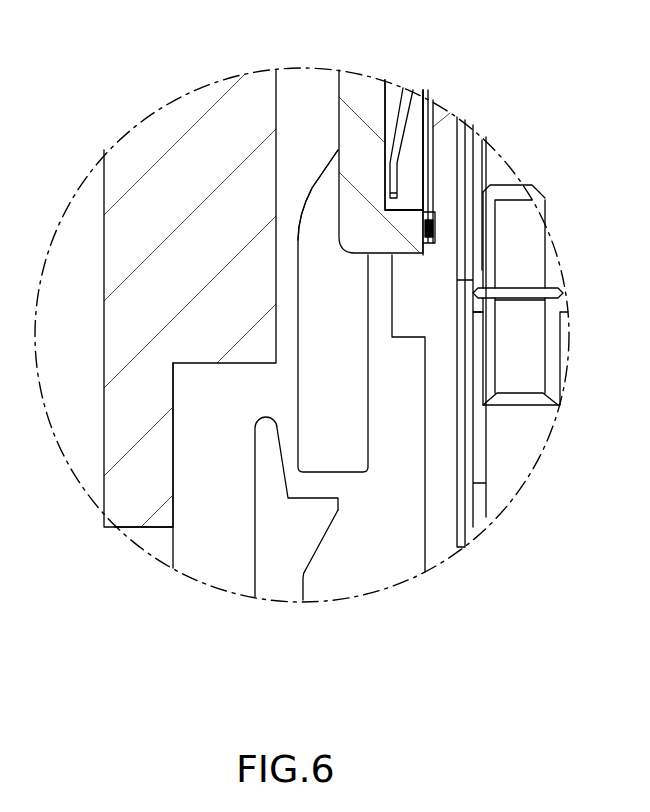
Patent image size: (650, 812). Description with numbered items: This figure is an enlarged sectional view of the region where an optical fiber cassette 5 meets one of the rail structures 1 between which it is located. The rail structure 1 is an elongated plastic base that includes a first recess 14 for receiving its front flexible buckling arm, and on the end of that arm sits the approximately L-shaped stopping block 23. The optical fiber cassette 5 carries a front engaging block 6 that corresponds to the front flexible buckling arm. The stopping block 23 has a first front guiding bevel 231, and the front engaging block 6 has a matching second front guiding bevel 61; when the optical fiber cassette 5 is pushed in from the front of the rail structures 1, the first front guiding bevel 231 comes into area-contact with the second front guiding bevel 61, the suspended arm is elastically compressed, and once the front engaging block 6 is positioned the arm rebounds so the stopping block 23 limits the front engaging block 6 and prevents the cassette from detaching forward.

The rail structure 1 is at (147, 302).
The second front guiding bevel 61 is at (312, 185).
The front engaging block 6 is at (327, 239).
The optical fiber cassette 5 is at (523, 237).
The first recess 14 is at (215, 565).
The stopping block 23 is at (354, 542).
The first front guiding bevel 231 is at (318, 545).